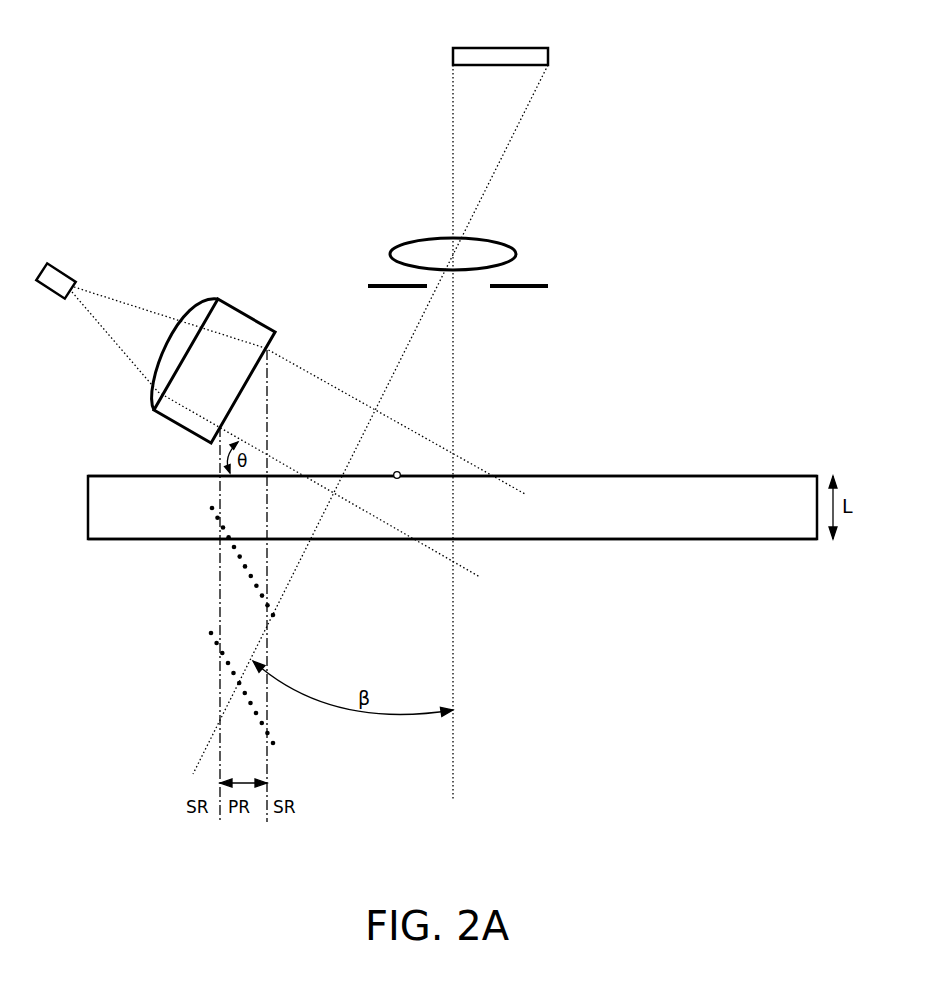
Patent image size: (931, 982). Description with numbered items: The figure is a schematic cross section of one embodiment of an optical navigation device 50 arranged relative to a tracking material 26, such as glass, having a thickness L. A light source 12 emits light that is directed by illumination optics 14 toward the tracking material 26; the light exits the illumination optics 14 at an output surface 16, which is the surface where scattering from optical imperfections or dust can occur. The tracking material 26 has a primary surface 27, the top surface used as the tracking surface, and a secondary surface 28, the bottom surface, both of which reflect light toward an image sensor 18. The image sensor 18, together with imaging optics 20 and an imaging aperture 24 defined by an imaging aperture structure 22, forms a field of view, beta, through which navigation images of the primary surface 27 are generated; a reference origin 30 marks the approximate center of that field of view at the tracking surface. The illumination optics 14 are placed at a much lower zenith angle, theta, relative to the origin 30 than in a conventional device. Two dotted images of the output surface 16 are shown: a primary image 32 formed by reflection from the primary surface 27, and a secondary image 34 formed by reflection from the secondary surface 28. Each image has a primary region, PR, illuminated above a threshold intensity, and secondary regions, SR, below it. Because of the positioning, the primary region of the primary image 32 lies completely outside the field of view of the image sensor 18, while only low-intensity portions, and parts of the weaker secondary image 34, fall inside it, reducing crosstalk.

The optical navigation device 50 is at (248, 63).
The light source 12 is at (66, 272).
The illumination optics 14 is at (236, 306).
The output surface 16 is at (258, 378).
The image sensor 18 is at (548, 56).
The imaging optics 20 is at (503, 242).
The imaging aperture structure 22 is at (540, 285).
The imaging aperture 24 is at (476, 290).
The tracking material 26 is at (565, 495).
The primary surface 27 is at (628, 468).
The secondary surface 28 is at (693, 530).
The reference origin 30 is at (400, 473).
The primary image 32 is at (238, 558).
The secondary image 34 is at (232, 678).